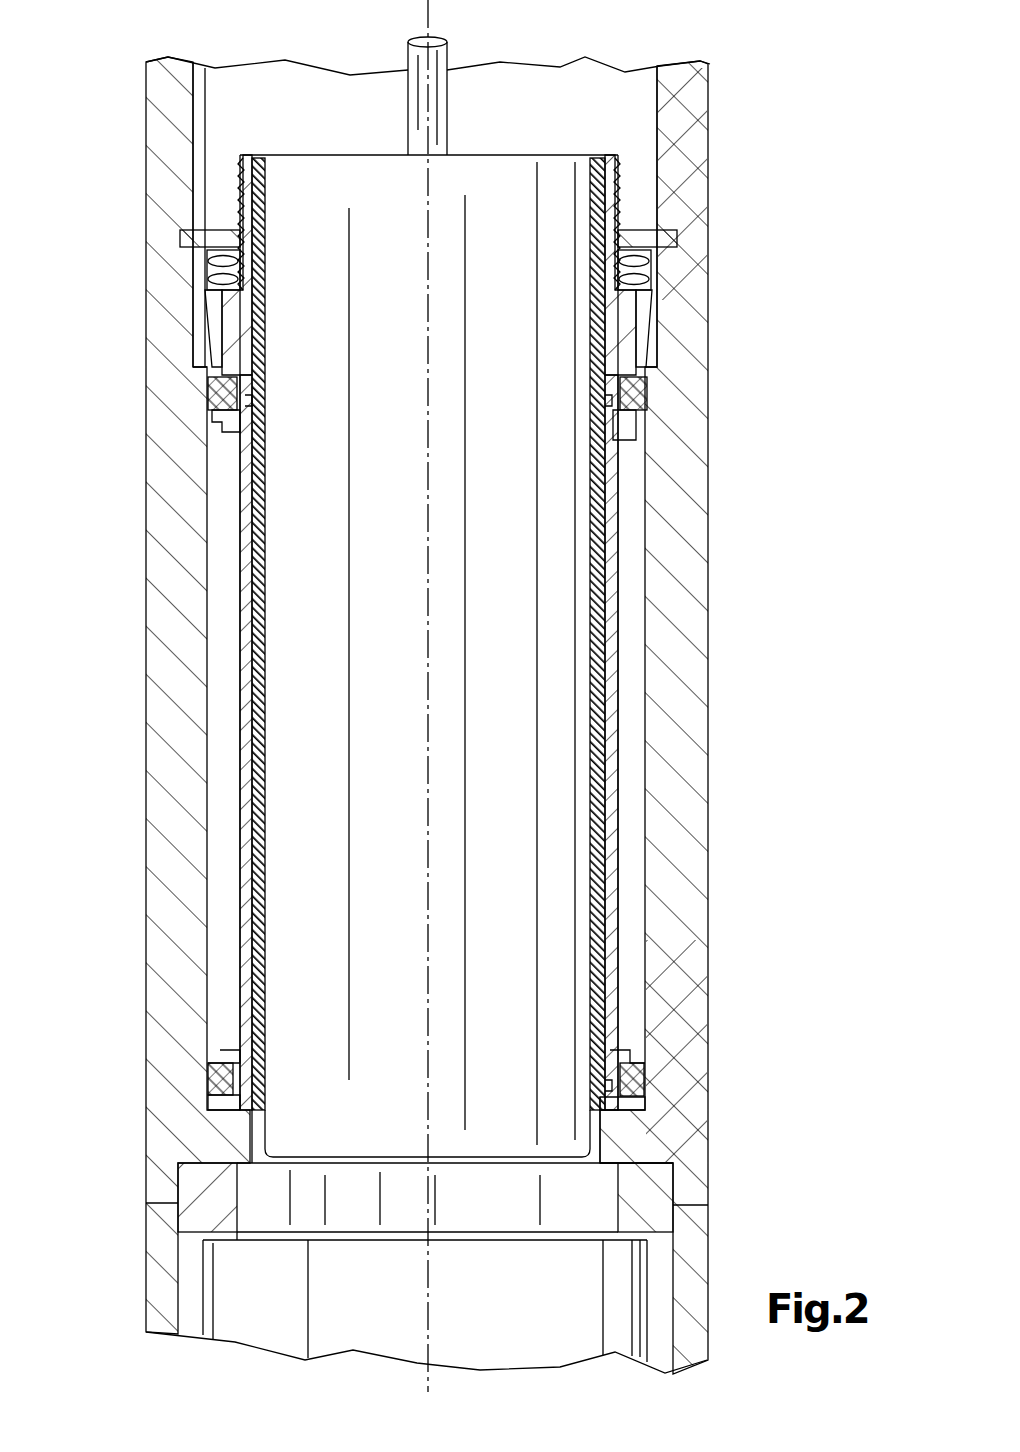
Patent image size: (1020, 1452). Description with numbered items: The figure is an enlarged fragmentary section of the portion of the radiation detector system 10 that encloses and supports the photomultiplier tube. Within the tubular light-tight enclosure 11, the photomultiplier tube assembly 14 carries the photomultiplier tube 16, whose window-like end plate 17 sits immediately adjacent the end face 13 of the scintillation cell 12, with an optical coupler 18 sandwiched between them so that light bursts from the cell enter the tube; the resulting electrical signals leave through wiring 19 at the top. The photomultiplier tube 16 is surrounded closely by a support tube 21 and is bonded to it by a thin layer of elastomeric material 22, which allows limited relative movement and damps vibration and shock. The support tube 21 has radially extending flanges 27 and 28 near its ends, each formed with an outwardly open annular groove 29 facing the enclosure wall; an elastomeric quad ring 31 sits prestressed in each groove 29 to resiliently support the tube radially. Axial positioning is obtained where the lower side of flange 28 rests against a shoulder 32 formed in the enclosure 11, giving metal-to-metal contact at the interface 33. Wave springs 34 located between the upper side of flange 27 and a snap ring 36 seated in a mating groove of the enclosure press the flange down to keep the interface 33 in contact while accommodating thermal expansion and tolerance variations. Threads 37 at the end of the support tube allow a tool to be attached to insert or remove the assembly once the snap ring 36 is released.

The radiation detector system 10 is at (780, 588).
The light-tight enclosure 11 is at (682, 855).
The scintillation cell 12 is at (225, 1325).
The end face 13 is at (487, 1163).
The photomultiplier tube assembly 14 is at (618, 768).
The photomultiplier tube 16 is at (373, 190).
The end plate 17 is at (300, 1163).
The optical coupler 18 is at (373, 1160).
The wiring 19 is at (442, 92).
The support tube 21 is at (620, 655).
The elastomeric material 22 is at (608, 515).
The flange 27 is at (640, 378).
The flange 28 is at (632, 1058).
The annular grooves 29 is at (610, 402).
The elastomeric rings 31 is at (646, 396).
The shoulder 32 is at (632, 1130).
The interface 33 is at (634, 1115).
The wave springs 34 is at (642, 273).
The snap ring 36 is at (657, 224).
The threads 37 is at (620, 185).